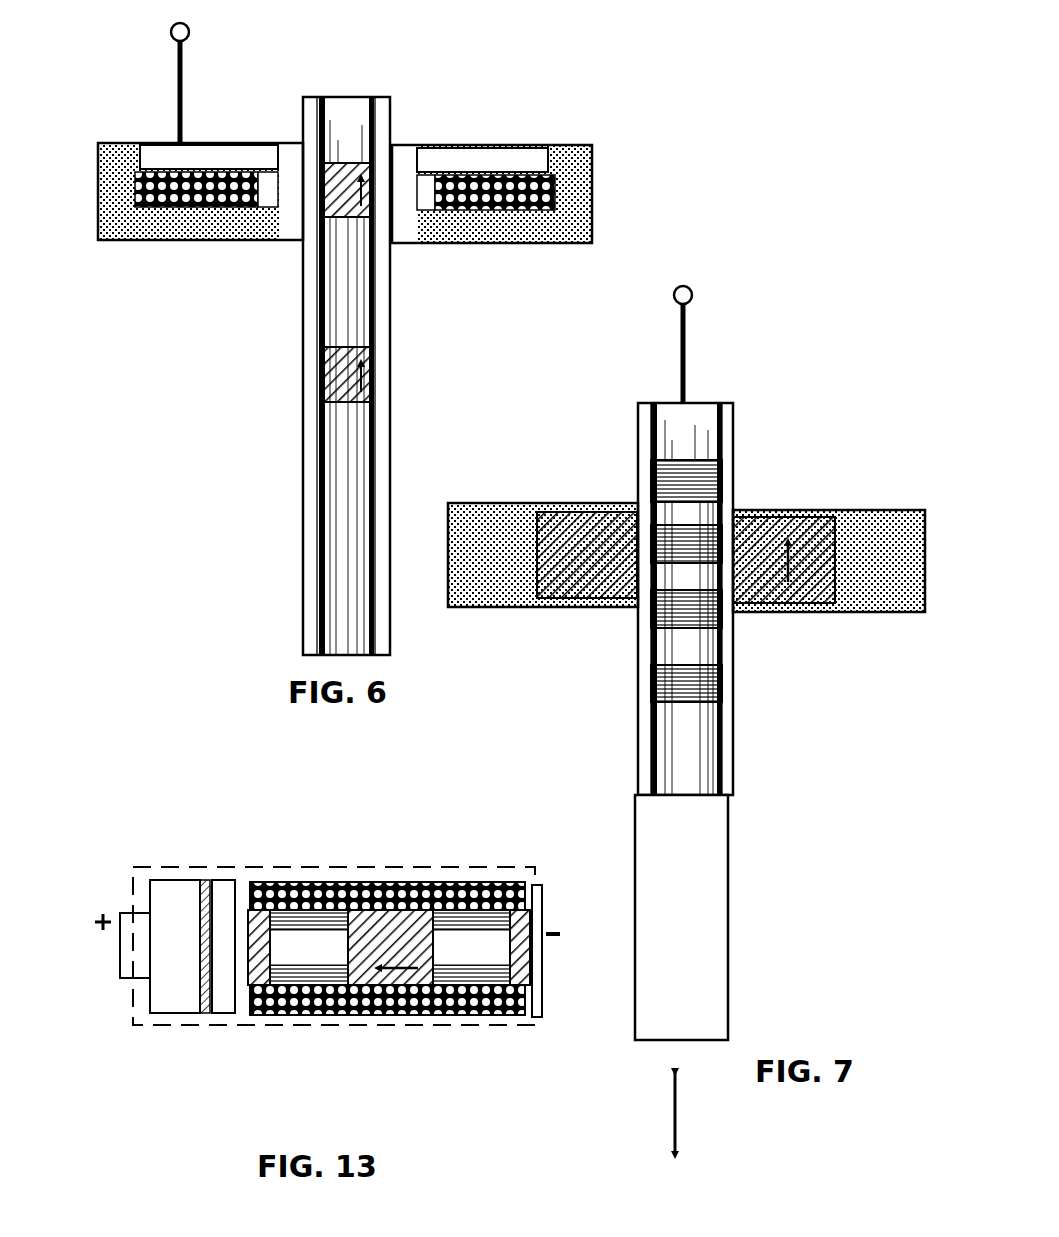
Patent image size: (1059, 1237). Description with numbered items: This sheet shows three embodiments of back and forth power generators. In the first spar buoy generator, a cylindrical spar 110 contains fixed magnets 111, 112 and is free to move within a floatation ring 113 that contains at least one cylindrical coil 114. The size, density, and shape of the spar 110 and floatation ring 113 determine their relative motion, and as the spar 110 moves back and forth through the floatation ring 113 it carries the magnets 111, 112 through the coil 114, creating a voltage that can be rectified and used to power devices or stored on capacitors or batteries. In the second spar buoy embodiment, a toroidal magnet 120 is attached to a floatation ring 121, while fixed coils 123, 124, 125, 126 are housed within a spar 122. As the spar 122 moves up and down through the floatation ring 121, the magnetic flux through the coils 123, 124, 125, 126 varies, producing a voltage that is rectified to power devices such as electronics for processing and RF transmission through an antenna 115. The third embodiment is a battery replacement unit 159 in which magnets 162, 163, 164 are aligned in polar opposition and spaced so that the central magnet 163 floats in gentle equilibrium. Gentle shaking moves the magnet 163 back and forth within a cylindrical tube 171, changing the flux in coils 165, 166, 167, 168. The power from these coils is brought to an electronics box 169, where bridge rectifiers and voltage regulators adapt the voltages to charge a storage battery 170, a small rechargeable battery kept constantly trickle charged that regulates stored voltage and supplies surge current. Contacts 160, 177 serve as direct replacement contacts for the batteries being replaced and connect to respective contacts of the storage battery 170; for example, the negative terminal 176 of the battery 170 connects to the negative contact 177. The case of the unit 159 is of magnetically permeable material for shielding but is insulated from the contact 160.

In FIG. 6, the cylindrical spar 110 is at (348, 96).
In FIG. 6, the fixed magnet 111 is at (345, 164).
In FIG. 6, the fixed magnet 112 is at (343, 347).
In FIG. 6, the floatation ring 113 is at (592, 205).
In FIG. 6, the cylindrical coil 114 is at (134, 177).
In FIG. 6, the antenna 115 is at (177, 80).
In FIG. 7, the antenna 115 is at (682, 338).
In FIG. 7, the toroidal magnet 120 is at (792, 516).
In FIG. 7, the floatation ring 121 is at (876, 578).
In FIG. 7, the spar 122 is at (733, 443).
In FIG. 7, the fixed coil 123 is at (667, 467).
In FIG. 7, the fixed coil 124 is at (673, 535).
In FIG. 7, the fixed coil 125 is at (638, 610).
In FIG. 7, the fixed coil 126 is at (713, 688).
In FIG. 13, the battery replacement unit 159 is at (205, 1025).
In FIG. 13, the contact 160 is at (120, 972).
In FIG. 13, the magnet 162 is at (527, 935).
In FIG. 13, the magnet 163 is at (432, 957).
In FIG. 13, the magnet 164 is at (224, 1013).
In FIG. 13, the coil 165 is at (265, 882).
In FIG. 13, the coil 166 is at (348, 882).
In FIG. 13, the coil 167 is at (495, 886).
In FIG. 13, the coil 168 is at (515, 884).
In FIG. 13, the electronics box 169 is at (222, 878).
In FIG. 13, the storage battery 170 is at (160, 882).
In FIG. 13, the cylindrical tube 171 is at (300, 1013).
In FIG. 13, the negative terminal 176 is at (204, 880).
In FIG. 13, the negative contact 177 is at (560, 985).